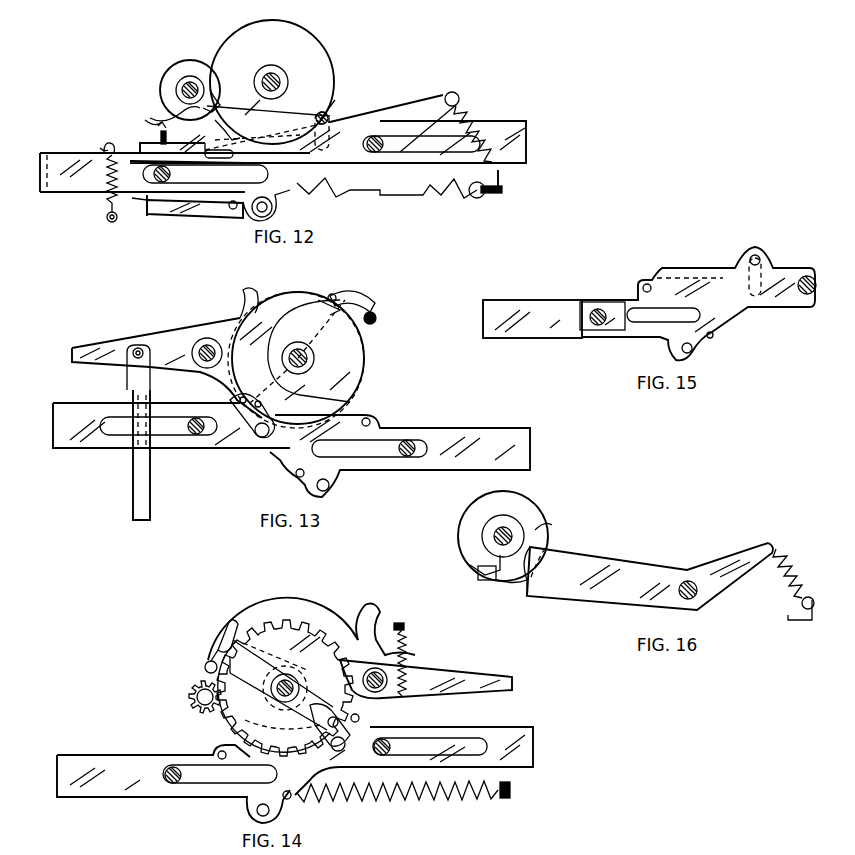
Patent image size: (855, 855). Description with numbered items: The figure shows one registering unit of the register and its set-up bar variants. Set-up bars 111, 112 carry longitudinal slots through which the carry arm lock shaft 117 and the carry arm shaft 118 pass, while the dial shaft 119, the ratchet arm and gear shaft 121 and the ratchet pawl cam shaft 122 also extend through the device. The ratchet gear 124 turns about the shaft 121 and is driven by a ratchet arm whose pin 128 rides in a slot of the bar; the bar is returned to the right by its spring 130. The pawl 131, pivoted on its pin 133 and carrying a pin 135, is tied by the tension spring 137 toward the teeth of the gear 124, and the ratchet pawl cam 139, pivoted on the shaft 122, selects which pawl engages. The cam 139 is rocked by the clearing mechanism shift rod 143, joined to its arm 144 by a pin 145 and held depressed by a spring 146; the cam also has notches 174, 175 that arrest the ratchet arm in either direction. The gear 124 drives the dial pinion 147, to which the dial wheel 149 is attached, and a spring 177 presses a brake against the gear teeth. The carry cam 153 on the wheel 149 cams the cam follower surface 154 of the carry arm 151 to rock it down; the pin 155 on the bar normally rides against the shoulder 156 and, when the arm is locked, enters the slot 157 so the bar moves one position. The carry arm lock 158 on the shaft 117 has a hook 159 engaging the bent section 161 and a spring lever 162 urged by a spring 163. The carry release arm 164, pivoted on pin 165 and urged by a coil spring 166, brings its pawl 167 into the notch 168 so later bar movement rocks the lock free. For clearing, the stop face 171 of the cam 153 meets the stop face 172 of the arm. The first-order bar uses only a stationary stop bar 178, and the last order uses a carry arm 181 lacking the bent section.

In FIG. 12, the set-up bar 111 is at (42, 192).
In FIG. 13, the set-up bar 111 is at (171, 425).
In FIG. 15, the set-up bar 111 is at (512, 312).
In FIG. 14, the set-up bar 111 is at (118, 800).
In FIG. 12, the set-up bar 112 is at (88, 178).
In FIG. 13, the set-up bar 112 is at (470, 430).
In FIG. 15, the set-up bar 112 is at (697, 303).
In FIG. 14, the set-up bar 112 is at (414, 761).
In FIG. 12, the carry arm lock shaft 117 is at (172, 174).
In FIG. 13, the carry arm lock shaft 117 is at (407, 458).
In FIG. 15, the carry arm lock shaft 117 is at (594, 326).
In FIG. 14, the carry arm lock shaft 117 is at (185, 778).
In FIG. 12, the carry arm shaft 118 is at (392, 142).
In FIG. 13, the carry arm shaft 118 is at (197, 436).
In FIG. 15, the carry arm shaft 118 is at (800, 295).
In FIG. 16, the carry arm shaft 118 is at (695, 580).
In FIG. 14, the carry arm shaft 118 is at (430, 746).
In FIG. 12, the dial shaft 119 is at (190, 80).
In FIG. 16, the dial shaft 119 is at (508, 532).
In FIG. 14, the dial shaft 119 is at (202, 703).
In FIG. 12, the ratchet arm and gear shaft 121 is at (288, 82).
In FIG. 13, the ratchet arm and gear shaft 121 is at (315, 365).
In FIG. 14, the ratchet arm and gear shaft 121 is at (278, 690).
In FIG. 13, the ratchet pawl cam shaft 122 is at (203, 340).
In FIG. 12, the ratchet gear 124 is at (312, 52).
In FIG. 13, the ratchet gear 124 is at (298, 358).
In FIG. 14, the ratchet gear 124 is at (300, 635).
In FIG. 12, the pin 128 is at (330, 112).
In FIG. 15, the pin 128 is at (758, 255).
In FIG. 14, the spring 130 is at (482, 800).
In FIG. 12, the pawl 131 is at (478, 198).
In FIG. 14, the pawl 131 is at (212, 638).
In FIG. 13, the pin 133 is at (378, 312).
In FIG. 13, the pin 135 is at (345, 296).
In FIG. 13, the tension spring 137 is at (325, 298).
In FIG. 13, the ratchet pawl cam 139 is at (290, 292).
In FIG. 14, the ratchet pawl cam 139 is at (283, 612).
In FIG. 13, the clearing mechanism shift rod 143 is at (152, 488).
In FIG. 13, the arm 144 is at (95, 346).
In FIG. 14, the arm 144 is at (470, 662).
In FIG. 13, the pin 145 is at (139, 345).
In FIG. 12, the spring 146 is at (460, 102).
In FIG. 16, the spring 146 is at (782, 552).
In FIG. 14, the dial pinion 147 is at (192, 700).
In FIG. 12, the dial wheel 149 is at (170, 65).
In FIG. 16, the dial wheel 149 is at (461, 534).
In FIG. 12, the carry arm 151 is at (402, 120).
In FIG. 12, the carry cam 153 is at (172, 105).
In FIG. 16, the carry cam 153 is at (480, 560).
In FIG. 12, the cam follower surface 154 is at (215, 100).
In FIG. 12, the pin 155 is at (248, 143).
In FIG. 15, the pin 155 is at (643, 287).
In FIG. 12, the shoulder 156 is at (228, 155).
In FIG. 16, the shoulder 156 is at (525, 595).
In FIG. 12, the slot 157 is at (267, 132).
In FIG. 16, the slot 157 is at (555, 568).
In FIG. 12, the carry arm lock 158 is at (110, 142).
In FIG. 12, the hook 159 is at (160, 126).
In FIG. 12, the bent section 161 is at (160, 137).
In FIG. 12, the arm 162 is at (102, 148).
In FIG. 12, the spring 163 is at (107, 220).
In FIG. 12, the carry release arm 164 is at (187, 217).
In FIG. 12, the pin 165 is at (272, 208).
In FIG. 12, the coil spring 166 is at (231, 210).
In FIG. 12, the pawl 167 is at (147, 217).
In FIG. 12, the notch 168 is at (142, 199).
In FIG. 12, the stop face 171 is at (155, 118).
In FIG. 16, the stop face 171 is at (490, 582).
In FIG. 12, the stop face 172 is at (192, 148).
In FIG. 16, the stop face 172 is at (554, 531).
In FIG. 14, the notch 174 is at (370, 615).
In FIG. 13, the notch 175 is at (251, 293).
In FIG. 14, the spring 177 is at (408, 633).
In FIG. 15, the stationary stop bar 178 is at (680, 283).
In FIG. 16, the carry arm 181 is at (612, 570).